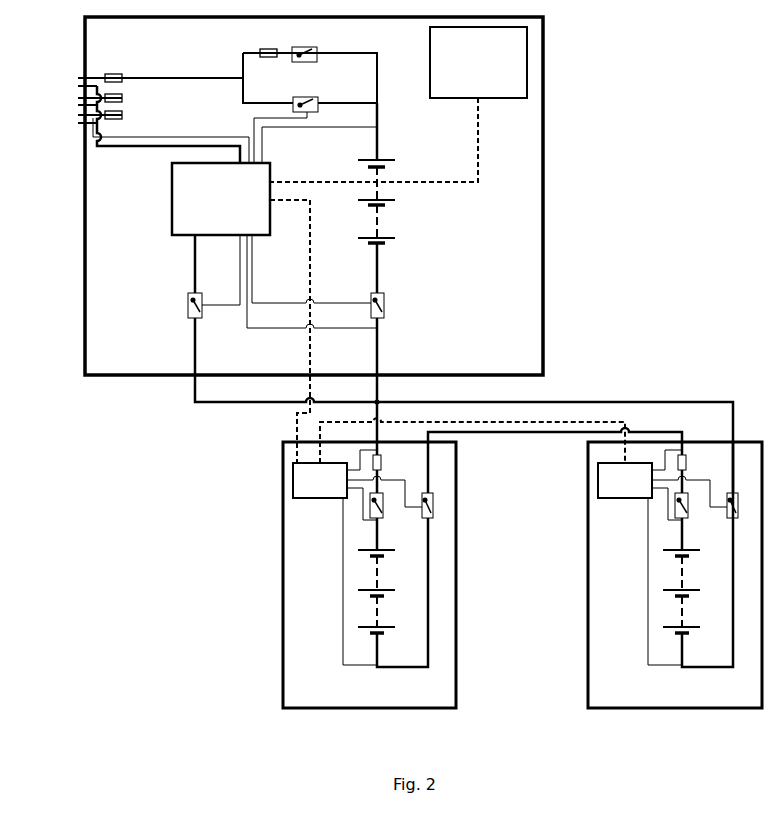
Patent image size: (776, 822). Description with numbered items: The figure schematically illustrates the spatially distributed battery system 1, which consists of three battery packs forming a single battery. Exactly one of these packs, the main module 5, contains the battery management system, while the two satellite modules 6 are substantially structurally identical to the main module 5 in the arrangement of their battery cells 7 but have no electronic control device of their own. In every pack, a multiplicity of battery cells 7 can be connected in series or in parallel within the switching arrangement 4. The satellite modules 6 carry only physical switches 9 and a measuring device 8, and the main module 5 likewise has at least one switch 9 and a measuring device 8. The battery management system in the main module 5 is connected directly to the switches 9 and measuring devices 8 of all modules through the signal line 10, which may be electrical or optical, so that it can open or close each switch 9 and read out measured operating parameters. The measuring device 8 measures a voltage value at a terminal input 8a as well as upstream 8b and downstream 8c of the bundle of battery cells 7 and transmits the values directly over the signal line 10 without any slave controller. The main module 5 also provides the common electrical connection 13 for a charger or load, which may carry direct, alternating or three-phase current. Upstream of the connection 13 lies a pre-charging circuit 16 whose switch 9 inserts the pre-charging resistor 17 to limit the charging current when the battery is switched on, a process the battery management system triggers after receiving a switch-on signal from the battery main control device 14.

The spatially distributed battery system 1 is at (130, 668).
The switching arrangement 4 is at (348, 53).
The main module 5 is at (545, 227).
The satellite module 6 is at (282, 618).
The battery cells 7 is at (402, 237).
The measuring device 8 is at (320, 500).
The terminal input 8a is at (163, 138).
The upstream measuring point 8b is at (332, 127).
The downstream measuring point 8c is at (258, 330).
The switch 9 is at (308, 95).
The signal line 10 is at (252, 118).
The electrical connection 13 is at (72, 110).
The battery main control device 14 is at (527, 62).
The pre-charging circuit 16 is at (377, 80).
The pre-charging resistor 17 is at (263, 53).